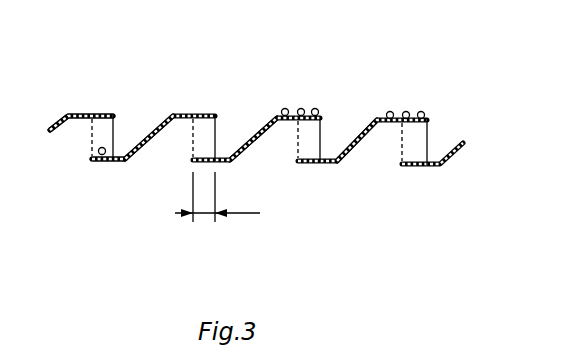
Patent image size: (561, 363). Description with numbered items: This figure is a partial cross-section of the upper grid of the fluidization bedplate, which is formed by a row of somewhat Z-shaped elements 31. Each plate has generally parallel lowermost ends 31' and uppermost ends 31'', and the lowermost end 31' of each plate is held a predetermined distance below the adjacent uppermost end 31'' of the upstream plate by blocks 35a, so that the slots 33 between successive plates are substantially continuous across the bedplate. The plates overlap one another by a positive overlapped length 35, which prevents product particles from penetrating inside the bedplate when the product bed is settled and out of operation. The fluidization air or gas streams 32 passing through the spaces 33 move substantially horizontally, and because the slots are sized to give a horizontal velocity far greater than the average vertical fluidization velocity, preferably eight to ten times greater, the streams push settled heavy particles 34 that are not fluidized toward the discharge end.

The elements 31 is at (279, 164).
The lowermost end 31' is at (108, 197).
The uppermost end 31'' is at (70, 90).
The air or gas streams 32 is at (262, 101).
The spaces 33 is at (129, 124).
The settled heavy particles 34 is at (303, 77).
The positive overlapped length 35 is at (217, 197).
The blocks 35a is at (100, 132).